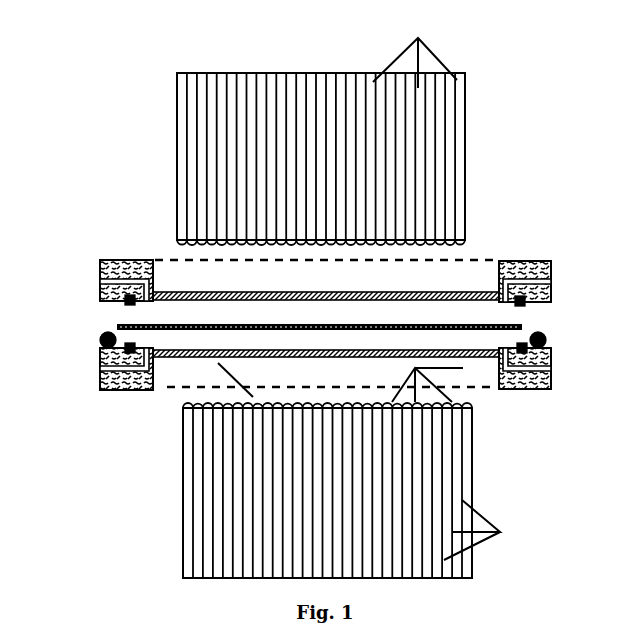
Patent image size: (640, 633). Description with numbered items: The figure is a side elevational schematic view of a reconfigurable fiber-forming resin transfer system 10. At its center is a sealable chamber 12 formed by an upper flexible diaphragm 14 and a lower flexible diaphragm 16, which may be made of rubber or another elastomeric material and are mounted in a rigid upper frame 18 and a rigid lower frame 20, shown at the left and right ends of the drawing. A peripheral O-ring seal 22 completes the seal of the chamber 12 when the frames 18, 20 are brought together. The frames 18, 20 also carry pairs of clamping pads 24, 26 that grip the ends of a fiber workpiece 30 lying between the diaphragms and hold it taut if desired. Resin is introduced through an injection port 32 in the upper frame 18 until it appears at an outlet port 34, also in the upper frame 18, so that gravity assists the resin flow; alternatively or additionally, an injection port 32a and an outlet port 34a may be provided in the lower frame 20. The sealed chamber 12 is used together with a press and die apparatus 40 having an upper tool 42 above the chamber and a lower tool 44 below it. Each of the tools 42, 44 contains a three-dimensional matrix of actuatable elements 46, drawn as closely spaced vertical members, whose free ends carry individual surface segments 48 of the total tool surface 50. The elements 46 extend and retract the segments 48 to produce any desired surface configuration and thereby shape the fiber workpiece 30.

The reconfigurable fiber-forming resin transfer system 10 is at (555, 37).
The sealable chamber 12 is at (513, 198).
The upper flexible diaphragm 14 is at (455, 297).
The lower flexible diaphragm 16 is at (463, 357).
The upper frame 18 is at (550, 262).
The lower frame 20 is at (550, 388).
The peripheral O-ring seal 22 is at (546, 342).
The clamping pads 24 is at (128, 348).
The clamping pads 26 is at (520, 305).
The fiber workpiece 30 is at (233, 330).
The injection port 32 is at (100, 282).
The injection port 32a is at (100, 368).
The outlet port 34 is at (552, 283).
The outlet port 34a is at (550, 368).
The press and die apparatus 40 is at (97, 63).
The upper tool 42 is at (283, 72).
The lower tool 44 is at (185, 522).
The actuatable elements 46 is at (449, 289).
The surface segments 48 is at (463, 368).
The tool surface 50 is at (218, 363).